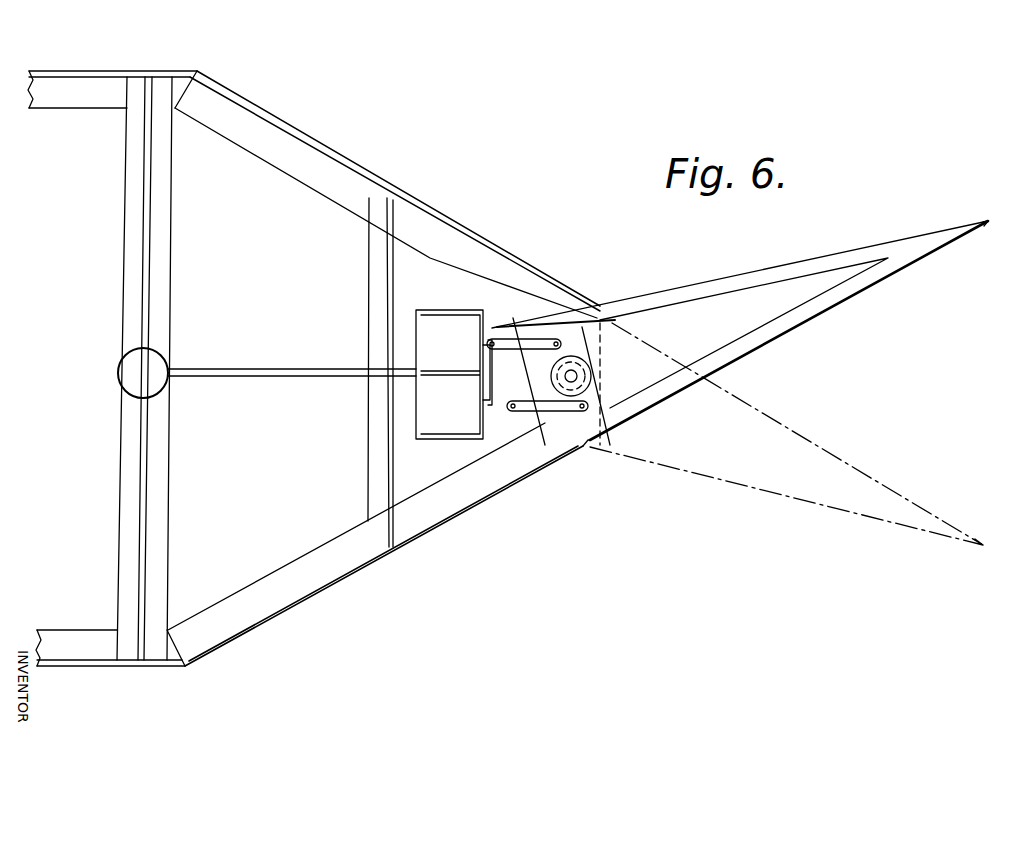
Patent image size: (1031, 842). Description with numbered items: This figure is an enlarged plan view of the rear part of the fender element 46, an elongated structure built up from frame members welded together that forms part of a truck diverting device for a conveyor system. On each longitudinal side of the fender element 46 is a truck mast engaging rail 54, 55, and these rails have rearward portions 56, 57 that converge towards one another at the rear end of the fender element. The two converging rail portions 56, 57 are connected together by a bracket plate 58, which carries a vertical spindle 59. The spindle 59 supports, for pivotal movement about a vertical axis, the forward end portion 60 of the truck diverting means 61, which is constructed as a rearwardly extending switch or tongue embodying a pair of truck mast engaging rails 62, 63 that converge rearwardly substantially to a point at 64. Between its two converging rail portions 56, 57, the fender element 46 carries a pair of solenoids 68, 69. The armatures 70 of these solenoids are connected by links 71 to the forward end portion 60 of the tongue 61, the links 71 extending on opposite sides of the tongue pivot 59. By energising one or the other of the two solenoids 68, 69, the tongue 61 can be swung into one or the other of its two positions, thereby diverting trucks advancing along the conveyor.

The fender element 46 is at (50, 60).
The truck mast engaging rail 54 is at (128, 667).
The truck mast engaging rail 55 is at (125, 70).
The rearward portion of rail 56 is at (392, 548).
The rearward portion of rail 57 is at (437, 212).
The bracket plate 58 is at (517, 318).
The vertical spindle 59 is at (571, 382).
The forward end portion 60 is at (590, 410).
The truck diverting means 61 is at (662, 318).
The truck mast engaging rail 62 is at (858, 290).
The truck mast engaging rail 63 is at (800, 260).
The point 64 is at (988, 221).
The solenoid 68 is at (440, 294).
The solenoid 69 is at (430, 413).
The armatures 70 is at (500, 339).
The links 71 is at (548, 345).